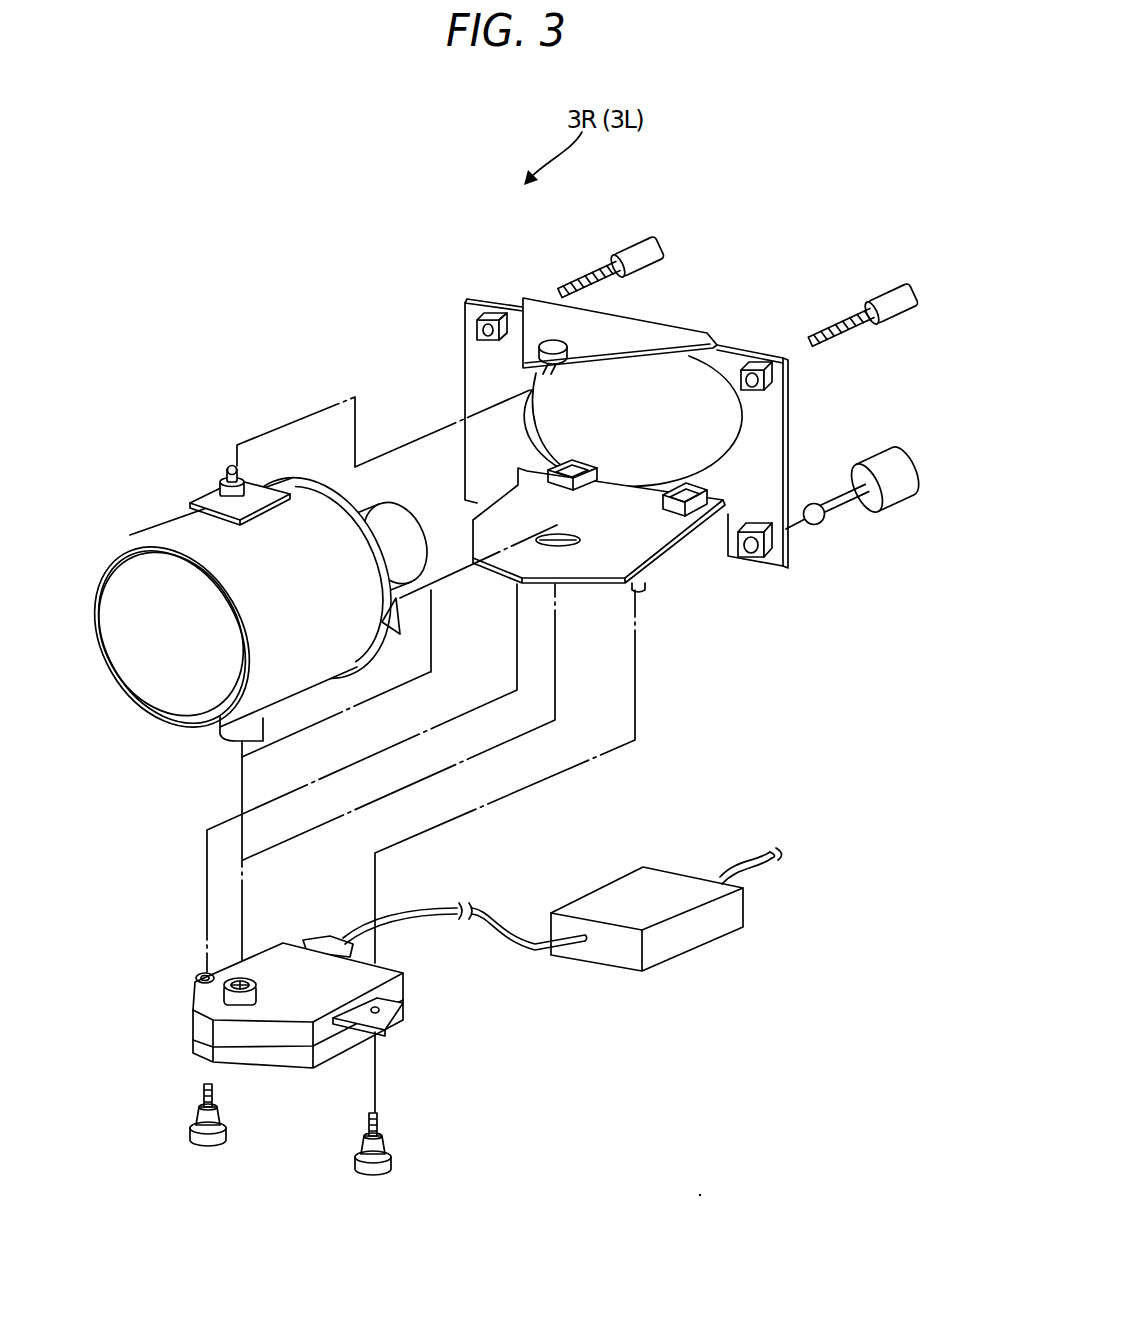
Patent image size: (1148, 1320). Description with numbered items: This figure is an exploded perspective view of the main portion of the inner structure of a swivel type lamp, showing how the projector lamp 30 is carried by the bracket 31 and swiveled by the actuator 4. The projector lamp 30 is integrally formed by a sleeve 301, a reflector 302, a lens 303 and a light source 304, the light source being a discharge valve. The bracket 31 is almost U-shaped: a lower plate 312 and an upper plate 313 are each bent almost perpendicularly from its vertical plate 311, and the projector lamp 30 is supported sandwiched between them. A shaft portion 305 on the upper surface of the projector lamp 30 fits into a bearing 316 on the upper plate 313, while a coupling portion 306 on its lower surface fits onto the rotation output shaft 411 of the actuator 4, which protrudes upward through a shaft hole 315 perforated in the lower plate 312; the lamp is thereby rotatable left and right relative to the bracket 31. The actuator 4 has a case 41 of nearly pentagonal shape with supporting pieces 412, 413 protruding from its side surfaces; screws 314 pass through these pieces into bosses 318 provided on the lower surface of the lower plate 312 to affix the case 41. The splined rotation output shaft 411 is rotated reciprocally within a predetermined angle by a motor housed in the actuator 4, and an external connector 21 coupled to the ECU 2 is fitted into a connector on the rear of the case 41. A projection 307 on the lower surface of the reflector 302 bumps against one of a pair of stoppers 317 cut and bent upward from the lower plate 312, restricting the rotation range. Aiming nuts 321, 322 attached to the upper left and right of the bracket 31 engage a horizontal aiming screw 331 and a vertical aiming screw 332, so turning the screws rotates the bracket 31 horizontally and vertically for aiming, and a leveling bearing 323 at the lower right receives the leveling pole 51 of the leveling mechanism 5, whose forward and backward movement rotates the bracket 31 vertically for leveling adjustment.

The ECU 2 is at (710, 934).
The actuator 4 is at (414, 972).
The leveling mechanism 5 is at (903, 507).
The external connector 21 is at (322, 938).
The projector lamp 30 is at (140, 511).
The bracket 31 is at (459, 295).
The case 41 is at (290, 1056).
The leveling pole 51 is at (816, 525).
The sleeve 301 is at (305, 665).
The reflector 302 is at (398, 627).
The lens 303 is at (136, 682).
The light source 304 is at (408, 536).
The shaft portion 305 is at (226, 468).
The coupling portion 306 is at (230, 746).
The projection 307 is at (410, 612).
The vertical plate 311 is at (762, 450).
The lower plate 312 is at (662, 535).
The upper plate 313 is at (674, 333).
The screws 314 is at (226, 1140).
The shaft hole 315 is at (560, 548).
The bearing 316 is at (539, 349).
The stoppers 317 is at (572, 462).
The boss 318 is at (644, 590).
The aiming nut 321 is at (495, 314).
The aiming nut 322 is at (752, 366).
The leveling bearing 323 is at (760, 560).
The horizontal aiming screw 331 is at (648, 252).
The vertical aiming screw 332 is at (895, 290).
The rotation output shaft 411 is at (222, 1000).
The supporting piece 412 is at (391, 1024).
The supporting piece 413 is at (197, 978).